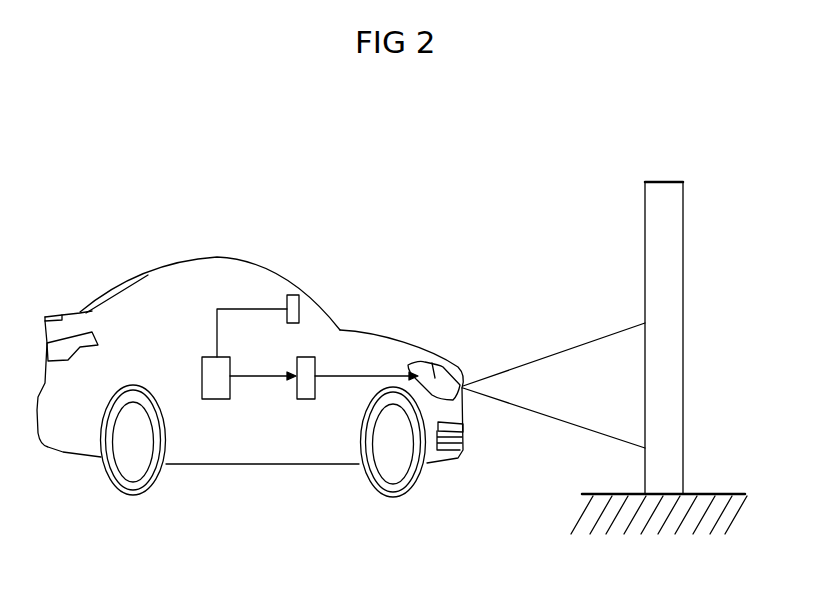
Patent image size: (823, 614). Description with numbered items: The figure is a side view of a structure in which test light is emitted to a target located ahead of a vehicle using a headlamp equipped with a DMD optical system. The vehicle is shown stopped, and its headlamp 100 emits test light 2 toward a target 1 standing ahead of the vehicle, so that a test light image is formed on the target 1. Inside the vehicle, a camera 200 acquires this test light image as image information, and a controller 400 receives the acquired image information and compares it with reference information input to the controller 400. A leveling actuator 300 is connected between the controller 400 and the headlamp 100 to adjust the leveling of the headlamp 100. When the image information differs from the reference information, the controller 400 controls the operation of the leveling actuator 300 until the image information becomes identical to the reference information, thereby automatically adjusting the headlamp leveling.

The target 1 is at (664, 200).
The test light 2 is at (538, 378).
The headlamp 100 is at (437, 358).
The camera 200 is at (293, 306).
The leveling actuator 300 is at (310, 392).
The controller 400 is at (218, 392).